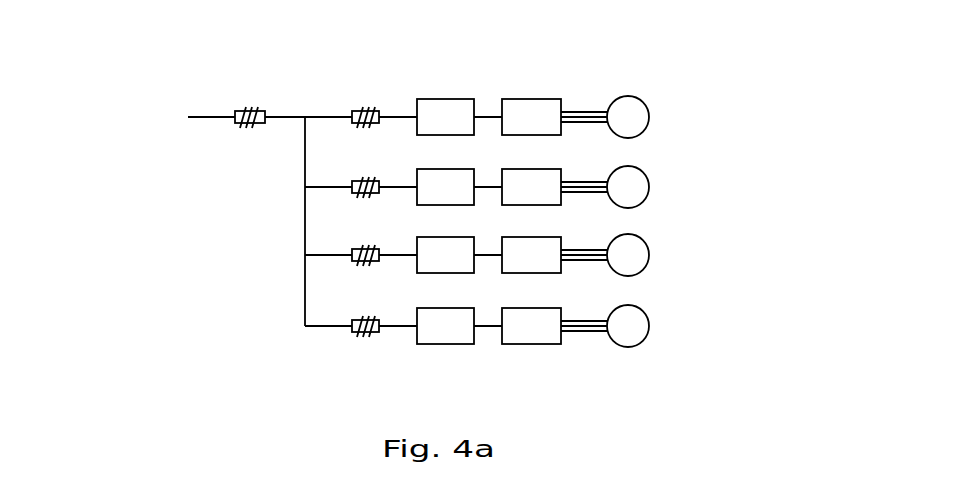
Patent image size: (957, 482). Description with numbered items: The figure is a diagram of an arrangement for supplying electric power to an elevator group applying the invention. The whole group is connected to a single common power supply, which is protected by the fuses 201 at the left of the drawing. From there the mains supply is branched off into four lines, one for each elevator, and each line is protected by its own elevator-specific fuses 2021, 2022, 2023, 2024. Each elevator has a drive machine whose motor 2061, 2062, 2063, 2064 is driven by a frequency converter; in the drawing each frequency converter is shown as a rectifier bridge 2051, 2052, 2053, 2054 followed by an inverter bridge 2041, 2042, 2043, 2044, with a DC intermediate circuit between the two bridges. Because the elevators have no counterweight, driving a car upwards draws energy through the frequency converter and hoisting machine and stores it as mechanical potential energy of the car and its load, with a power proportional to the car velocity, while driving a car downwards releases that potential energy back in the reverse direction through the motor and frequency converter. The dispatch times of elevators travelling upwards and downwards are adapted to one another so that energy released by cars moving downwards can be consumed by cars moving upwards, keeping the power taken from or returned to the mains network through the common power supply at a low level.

The fuses 201 is at (240, 108).
The elevator-specific fuses 2021 is at (354, 108).
The elevator-specific fuses 2022 is at (352, 195).
The elevator-specific fuses 2023 is at (352, 264).
The elevator-specific fuses 2024 is at (352, 333).
The rectifier bridge 2051 is at (452, 98).
The rectifier bridge 2052 is at (437, 206).
The rectifier bridge 2053 is at (437, 275).
The rectifier bridge 2054 is at (436, 345).
The inverter bridge 2041 is at (520, 98).
The inverter bridge 2042 is at (533, 169).
The inverter bridge 2043 is at (535, 237).
The inverter bridge 2044 is at (537, 307).
The motor 2061 is at (650, 116).
The motor 2062 is at (649, 190).
The motor 2063 is at (649, 260).
The motor 2064 is at (649, 330).